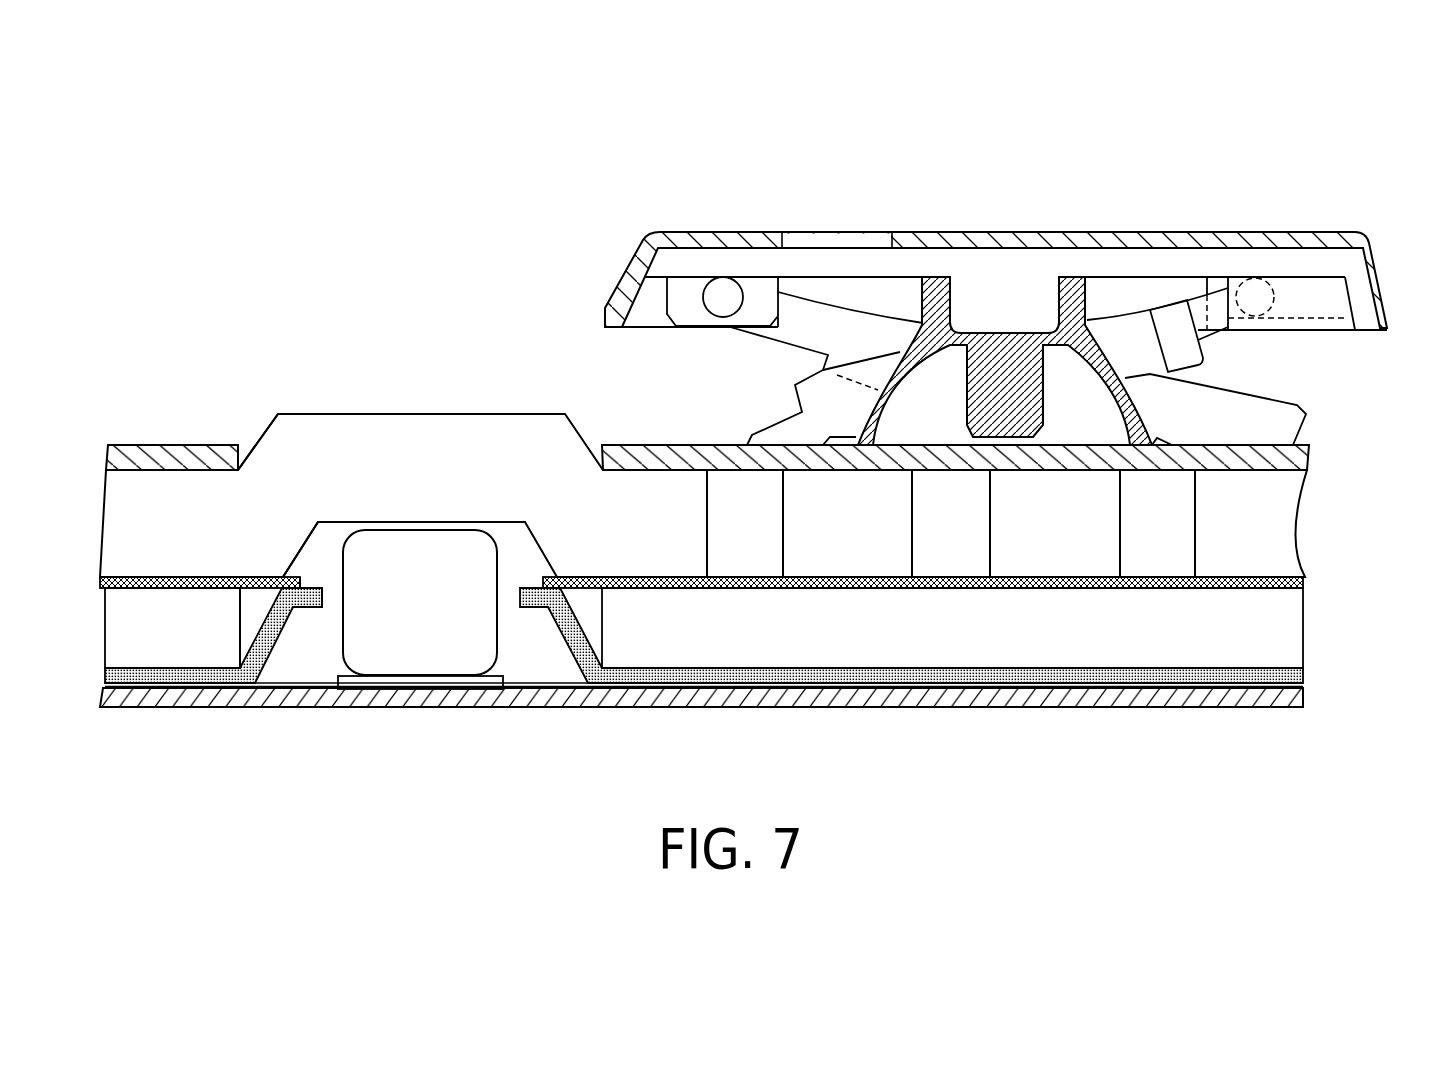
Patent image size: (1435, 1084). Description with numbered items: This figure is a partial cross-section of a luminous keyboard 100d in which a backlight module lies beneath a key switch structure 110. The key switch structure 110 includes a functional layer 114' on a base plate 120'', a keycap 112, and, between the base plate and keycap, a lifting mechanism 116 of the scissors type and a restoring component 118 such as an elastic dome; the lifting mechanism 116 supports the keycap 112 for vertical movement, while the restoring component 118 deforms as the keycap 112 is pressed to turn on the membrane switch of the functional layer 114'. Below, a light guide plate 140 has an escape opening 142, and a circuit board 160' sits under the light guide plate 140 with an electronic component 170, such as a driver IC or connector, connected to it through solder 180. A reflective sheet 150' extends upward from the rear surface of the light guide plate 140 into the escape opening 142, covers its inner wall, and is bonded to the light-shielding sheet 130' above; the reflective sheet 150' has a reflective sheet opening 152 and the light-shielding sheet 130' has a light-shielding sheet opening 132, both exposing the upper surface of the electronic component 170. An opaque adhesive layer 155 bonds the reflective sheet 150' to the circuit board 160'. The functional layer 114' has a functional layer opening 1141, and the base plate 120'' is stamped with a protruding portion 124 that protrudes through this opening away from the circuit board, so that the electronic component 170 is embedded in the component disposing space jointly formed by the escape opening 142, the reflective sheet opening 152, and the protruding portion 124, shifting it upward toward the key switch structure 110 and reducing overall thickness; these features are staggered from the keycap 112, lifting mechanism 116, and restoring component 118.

The luminous keyboard 100d is at (1418, 795).
The key switch structure 110 is at (1378, 205).
The keycap 112 is at (1027, 267).
The lifting mechanism 116 is at (802, 335).
The restoring component 118 is at (934, 283).
The functional layer 114' is at (707, 428).
The functional layer opening 1141 is at (242, 450).
The base plate 120'' is at (738, 466).
The protruding portion 124 is at (414, 414).
The light-shielding sheet 130' is at (736, 577).
The light-shielding sheet opening 132 is at (304, 578).
The light guide plate 140 is at (1298, 630).
The escape opening 142 is at (244, 610).
The reflective sheet 150' is at (739, 635).
The reflective sheet opening 152 is at (324, 598).
The adhesive layer 155 is at (1302, 686).
The circuit board 160' is at (736, 713).
The electronic component 170 is at (485, 638).
The solder 180 is at (465, 687).